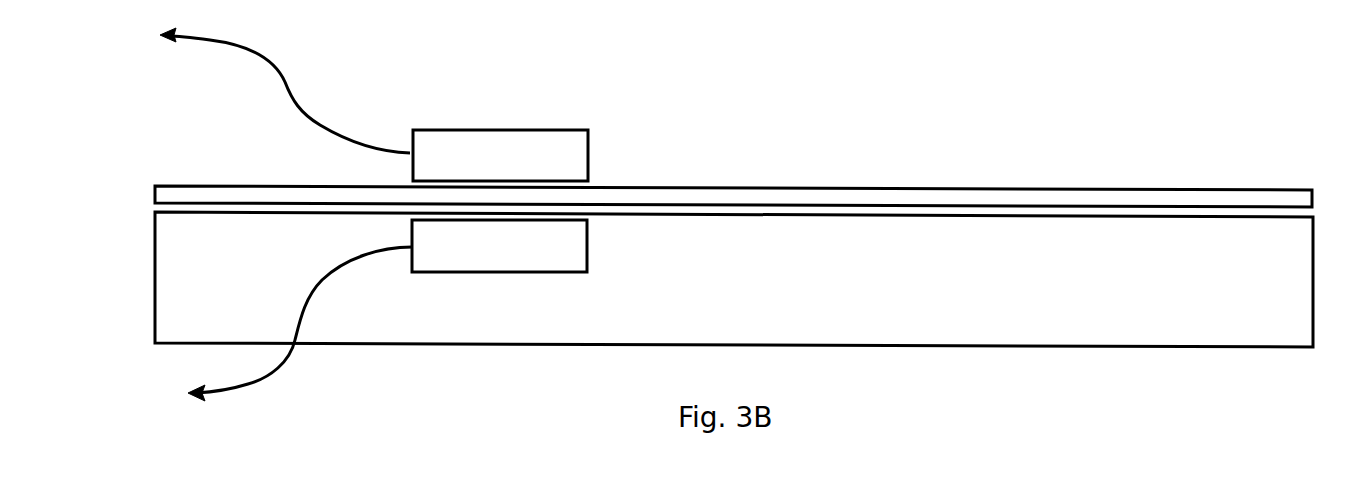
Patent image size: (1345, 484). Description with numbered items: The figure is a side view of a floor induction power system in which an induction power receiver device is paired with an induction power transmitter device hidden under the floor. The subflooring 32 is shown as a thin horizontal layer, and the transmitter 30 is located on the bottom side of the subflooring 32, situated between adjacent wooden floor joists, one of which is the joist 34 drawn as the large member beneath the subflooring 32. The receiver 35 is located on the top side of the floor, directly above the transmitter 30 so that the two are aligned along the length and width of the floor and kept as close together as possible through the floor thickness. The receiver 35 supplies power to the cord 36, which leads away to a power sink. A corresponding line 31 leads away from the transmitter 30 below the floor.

The transmitter 30 is at (575, 243).
The first lead wire 31 is at (347, 271).
The subflooring 32 is at (1130, 198).
The joist 34 is at (1057, 324).
The receiver 35 is at (543, 150).
The cord 36 is at (268, 68).